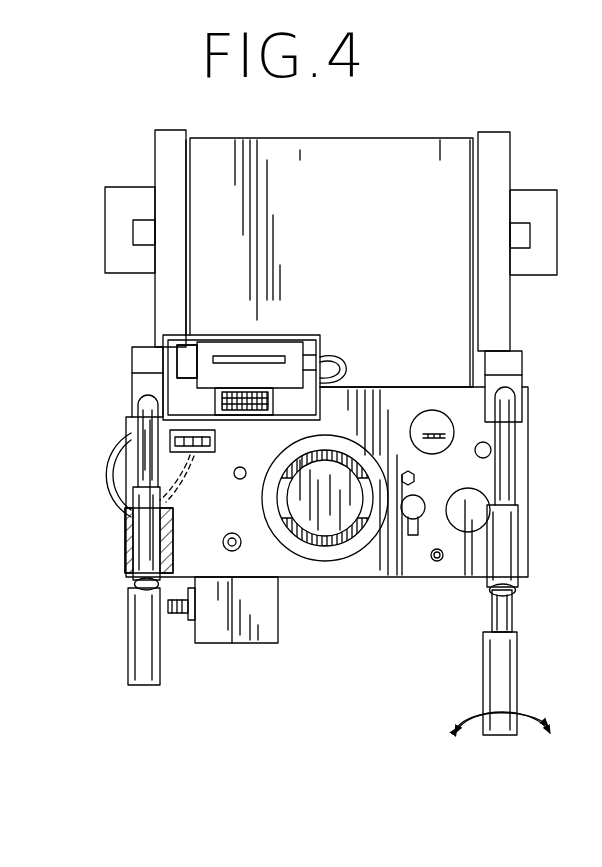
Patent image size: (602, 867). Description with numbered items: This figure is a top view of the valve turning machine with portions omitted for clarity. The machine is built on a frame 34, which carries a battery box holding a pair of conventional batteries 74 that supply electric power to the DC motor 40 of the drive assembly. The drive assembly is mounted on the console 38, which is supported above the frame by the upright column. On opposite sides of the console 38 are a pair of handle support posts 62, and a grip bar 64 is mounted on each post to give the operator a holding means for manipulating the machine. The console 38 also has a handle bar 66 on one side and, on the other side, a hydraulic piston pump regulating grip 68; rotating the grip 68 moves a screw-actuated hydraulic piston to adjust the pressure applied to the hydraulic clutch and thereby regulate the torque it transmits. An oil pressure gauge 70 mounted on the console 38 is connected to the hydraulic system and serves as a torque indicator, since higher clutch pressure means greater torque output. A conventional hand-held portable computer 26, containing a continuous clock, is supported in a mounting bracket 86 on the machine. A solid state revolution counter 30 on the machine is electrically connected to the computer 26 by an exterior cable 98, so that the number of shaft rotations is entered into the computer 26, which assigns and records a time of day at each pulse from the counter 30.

The batteries 74 is at (350, 170).
The frame 34 is at (516, 309).
The console 38 is at (375, 580).
The handle support posts 62 is at (146, 382).
The hand-held portable computer 26 is at (250, 338).
The mounting bracket 86 is at (197, 344).
The revolution counter 30 is at (191, 458).
The DC motor 40 is at (316, 548).
The oil pressure gauge 70 is at (462, 505).
The grip bar 64 is at (150, 463).
The exterior cable 98 is at (111, 447).
The handle bar 66 is at (145, 622).
The hydraulic piston pump regulating grip 68 is at (497, 655).